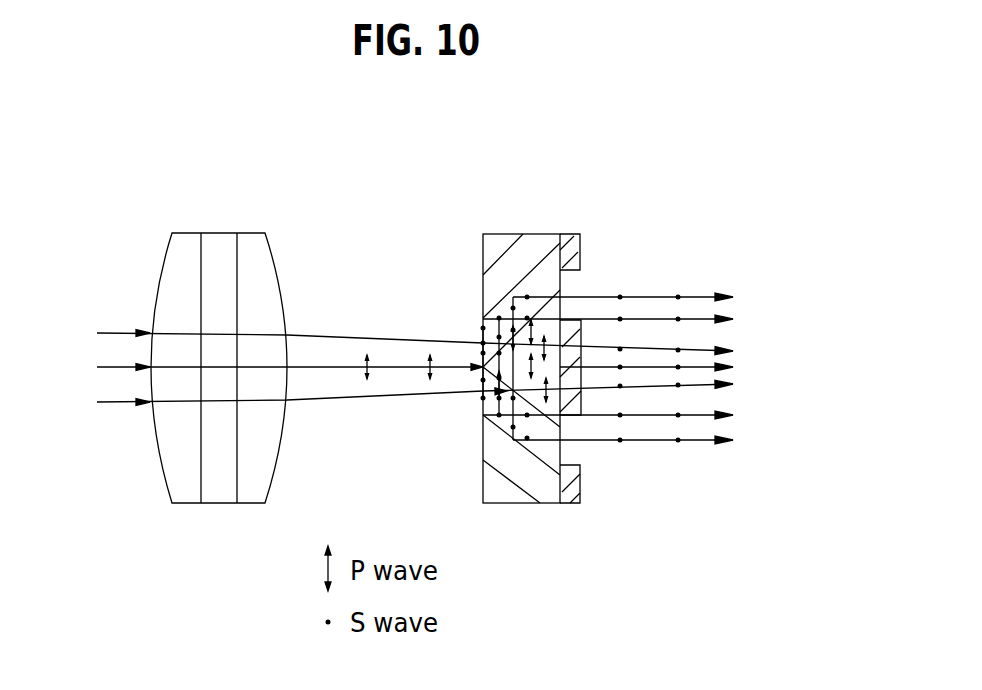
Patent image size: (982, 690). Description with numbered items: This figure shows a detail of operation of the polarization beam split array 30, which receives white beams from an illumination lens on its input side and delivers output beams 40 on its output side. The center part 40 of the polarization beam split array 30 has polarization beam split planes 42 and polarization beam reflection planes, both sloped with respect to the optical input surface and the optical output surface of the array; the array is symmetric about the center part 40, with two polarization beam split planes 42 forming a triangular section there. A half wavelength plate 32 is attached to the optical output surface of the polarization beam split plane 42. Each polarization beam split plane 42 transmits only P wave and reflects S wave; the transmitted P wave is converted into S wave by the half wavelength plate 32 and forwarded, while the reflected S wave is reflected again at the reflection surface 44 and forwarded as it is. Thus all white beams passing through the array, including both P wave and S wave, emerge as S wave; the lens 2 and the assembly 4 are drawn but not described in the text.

The lens 2 is at (158, 275).
The polarization beam splitter assembly 4 is at (592, 236).
The polarization beam split array 30 is at (481, 252).
The half wavelength plate 32 is at (582, 245).
The center part 40 is at (752, 335).
The polarization beam split plane 42 is at (483, 412).
The reflection surface 44 is at (536, 278).